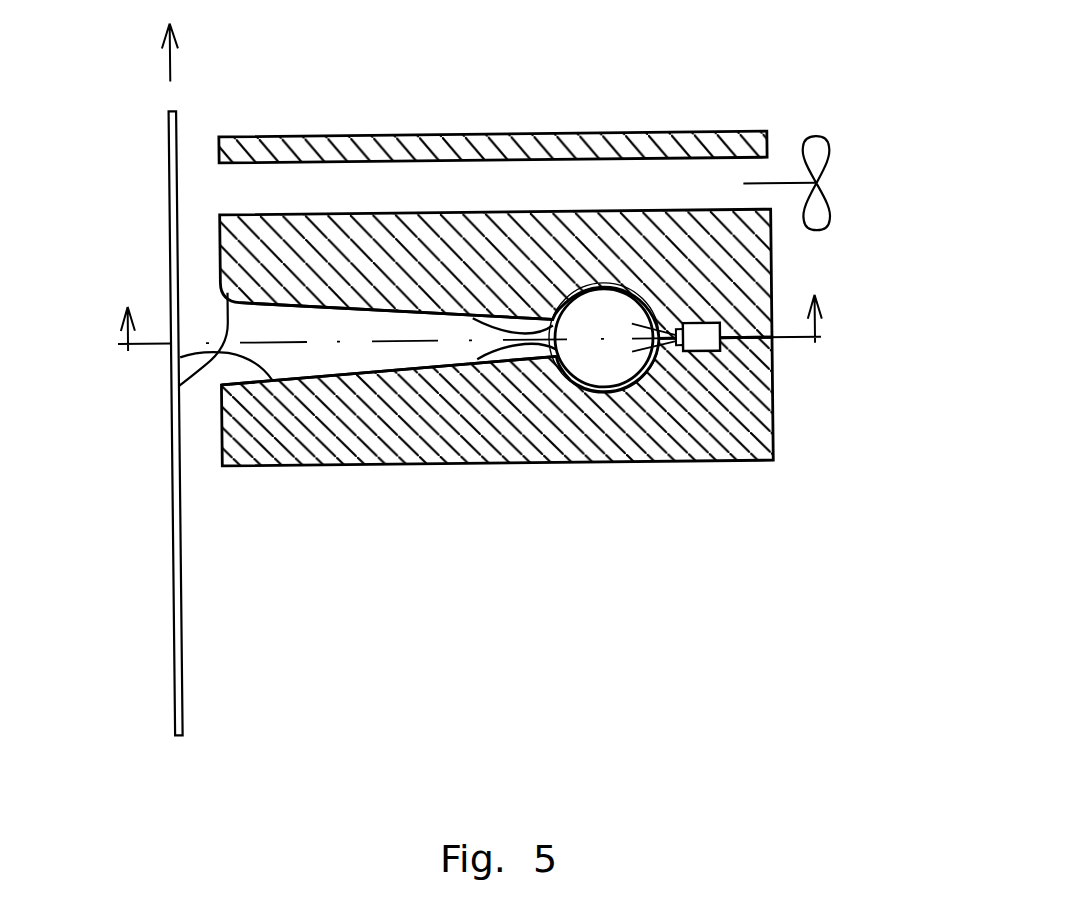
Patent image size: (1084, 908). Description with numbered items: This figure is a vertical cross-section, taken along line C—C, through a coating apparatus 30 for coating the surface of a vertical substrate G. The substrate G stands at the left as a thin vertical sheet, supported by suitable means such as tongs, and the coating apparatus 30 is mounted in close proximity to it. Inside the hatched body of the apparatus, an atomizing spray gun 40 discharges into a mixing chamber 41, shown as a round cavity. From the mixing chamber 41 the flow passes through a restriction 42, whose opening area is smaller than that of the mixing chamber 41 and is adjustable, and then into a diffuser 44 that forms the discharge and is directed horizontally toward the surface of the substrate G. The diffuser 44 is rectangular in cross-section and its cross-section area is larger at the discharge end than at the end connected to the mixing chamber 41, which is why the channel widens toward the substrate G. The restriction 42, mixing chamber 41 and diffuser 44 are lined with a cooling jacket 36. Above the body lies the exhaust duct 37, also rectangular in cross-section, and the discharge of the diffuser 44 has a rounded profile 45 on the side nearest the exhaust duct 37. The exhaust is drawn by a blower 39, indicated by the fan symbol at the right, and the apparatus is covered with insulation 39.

The coating apparatus 30 is at (828, 498).
The cooling jacket 36 is at (180, 354).
The exhaust duct 37 is at (507, 188).
The insulation 39 is at (670, 435).
The atomizing spray gun 40 is at (708, 353).
The mixing chamber 41 is at (612, 366).
The restriction 42 is at (514, 343).
The diffuser 44 is at (293, 352).
The rounded profile 45 is at (178, 383).
The substrate G is at (179, 599).
The section line C— C is at (467, 295).